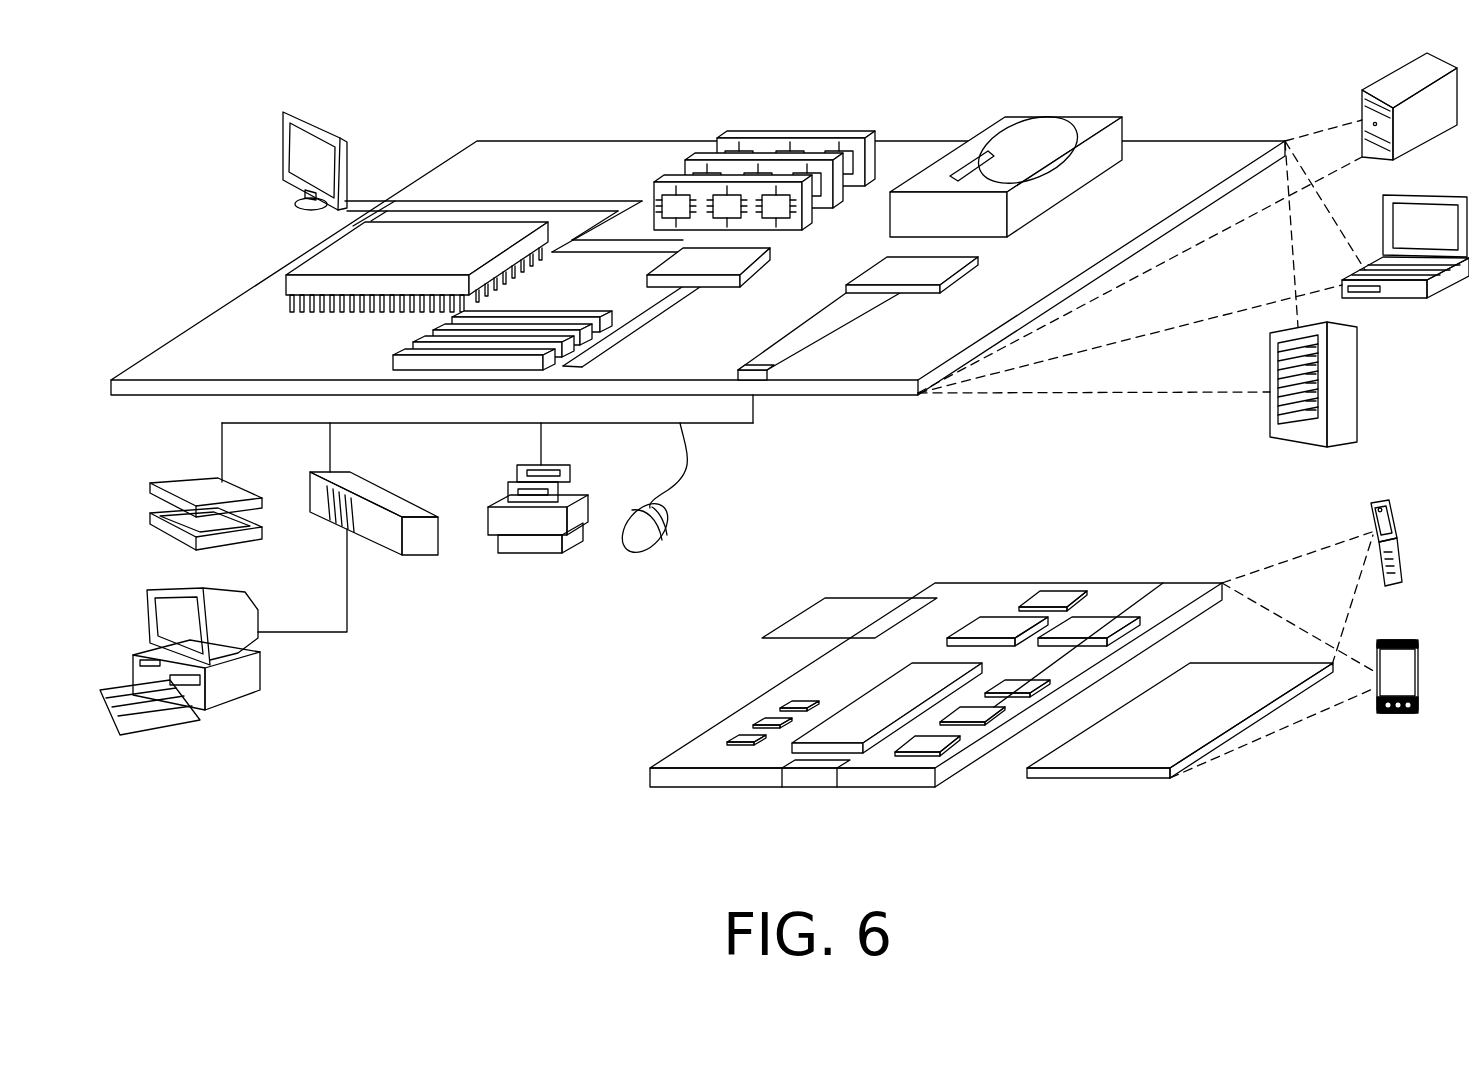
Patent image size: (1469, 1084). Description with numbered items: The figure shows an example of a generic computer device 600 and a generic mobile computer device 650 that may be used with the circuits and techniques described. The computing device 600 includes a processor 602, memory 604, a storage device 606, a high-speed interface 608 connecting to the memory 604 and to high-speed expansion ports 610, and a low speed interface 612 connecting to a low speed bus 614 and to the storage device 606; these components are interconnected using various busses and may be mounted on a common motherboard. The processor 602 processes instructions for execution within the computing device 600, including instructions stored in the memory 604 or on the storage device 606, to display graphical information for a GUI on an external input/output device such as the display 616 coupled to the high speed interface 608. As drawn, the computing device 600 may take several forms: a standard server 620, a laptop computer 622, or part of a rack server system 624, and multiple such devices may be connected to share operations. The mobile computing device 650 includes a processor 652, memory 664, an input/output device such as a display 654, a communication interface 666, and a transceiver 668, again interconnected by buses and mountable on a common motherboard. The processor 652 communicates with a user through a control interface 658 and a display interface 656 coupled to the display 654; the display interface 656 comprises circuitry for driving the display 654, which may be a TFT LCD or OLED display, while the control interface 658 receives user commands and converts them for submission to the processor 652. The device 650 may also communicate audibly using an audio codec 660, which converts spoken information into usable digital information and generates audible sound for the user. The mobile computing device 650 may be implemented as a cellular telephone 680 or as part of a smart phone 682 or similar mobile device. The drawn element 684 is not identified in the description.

The computing device 600 is at (427, 87).
The processor 602 is at (320, 254).
The memory 604 is at (800, 140).
The storage device 606 is at (1048, 115).
The high-speed interface 608 is at (727, 262).
The high-speed expansion ports 610 is at (420, 344).
The low speed interface 612 is at (886, 268).
The low speed bus 614 is at (758, 372).
The display 616 is at (284, 112).
The standard server 620 is at (1385, 85).
The laptop computer 622 is at (1446, 193).
The rack server system 624 is at (1357, 385).
The mobile computer device 650 is at (1266, 779).
The processor 652 is at (853, 717).
The display 654 is at (1220, 677).
The display interface 656 is at (956, 742).
The control interface 658 is at (980, 710).
The audio codec 660 is at (1027, 677).
The memory 664 is at (760, 718).
The communication interface 666 is at (1002, 620).
The transceiver 668 is at (1098, 620).
The cellular telephone 680 is at (1052, 600).
The smart phone 682 is at (1391, 640).
The antenna 684 is at (822, 598).